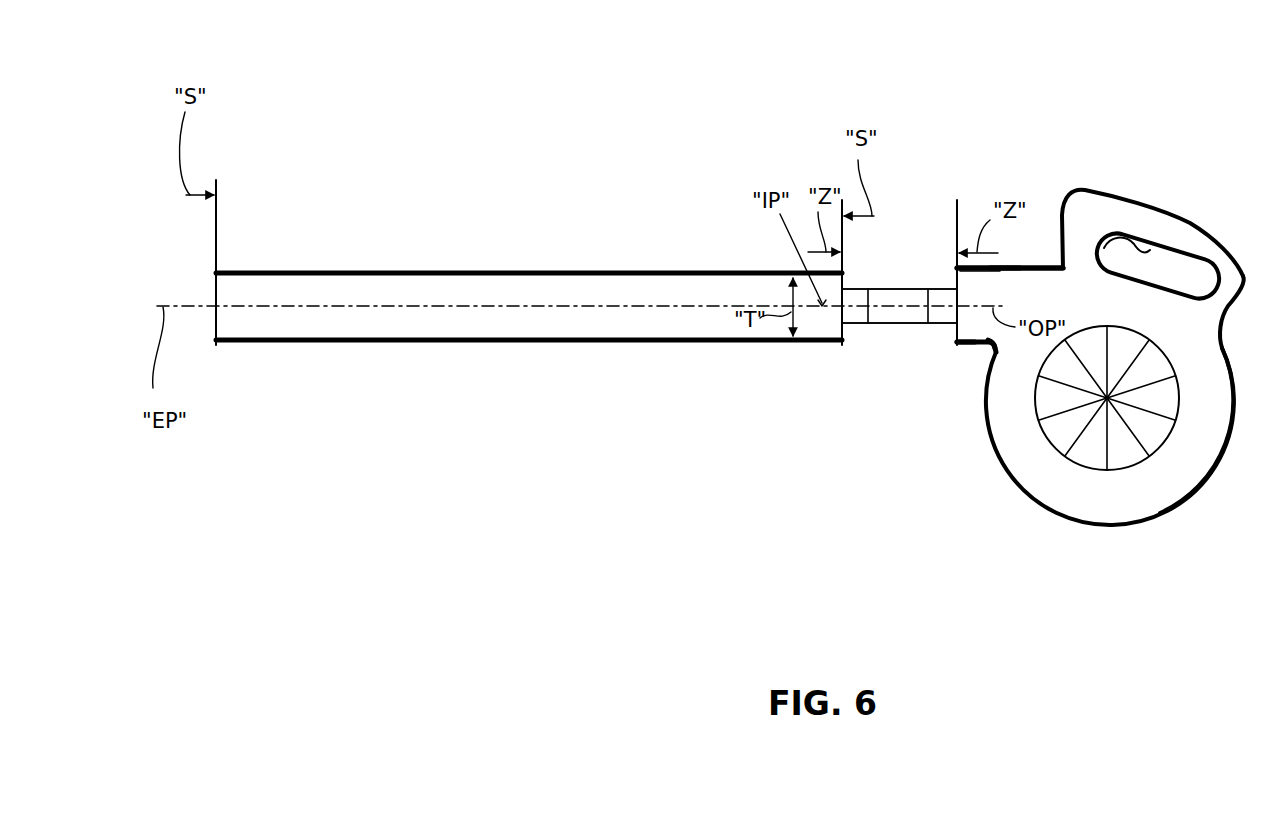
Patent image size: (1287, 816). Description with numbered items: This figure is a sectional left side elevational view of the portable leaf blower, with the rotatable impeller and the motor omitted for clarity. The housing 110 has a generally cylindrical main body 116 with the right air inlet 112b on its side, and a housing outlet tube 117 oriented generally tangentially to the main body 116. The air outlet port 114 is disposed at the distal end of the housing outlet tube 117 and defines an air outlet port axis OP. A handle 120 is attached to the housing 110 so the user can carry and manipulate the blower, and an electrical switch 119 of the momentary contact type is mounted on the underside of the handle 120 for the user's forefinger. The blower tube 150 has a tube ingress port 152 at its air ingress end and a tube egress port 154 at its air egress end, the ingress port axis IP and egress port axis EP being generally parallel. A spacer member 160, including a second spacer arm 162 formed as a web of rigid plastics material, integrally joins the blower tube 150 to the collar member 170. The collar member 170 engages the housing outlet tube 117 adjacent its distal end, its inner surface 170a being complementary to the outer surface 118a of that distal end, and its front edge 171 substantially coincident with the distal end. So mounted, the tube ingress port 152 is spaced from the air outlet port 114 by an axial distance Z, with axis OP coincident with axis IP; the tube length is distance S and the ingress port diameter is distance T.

The housing 110 is at (1007, 476).
The right air inlet 112b is at (1117, 452).
The air outlet port 114 is at (951, 281).
The main body 116 is at (1222, 458).
The housing outlet tube 117 is at (1004, 266).
The outer surface 118a is at (976, 274).
The electrical switch 119 is at (1143, 247).
The handle 120 is at (1177, 210).
The blower tube 150 is at (527, 272).
The tube ingress port 152 is at (844, 333).
The tube egress port 154 is at (214, 328).
The spacer member 160 is at (892, 298).
The second spacer arm 162 is at (899, 306).
The collar member 170 is at (970, 344).
The inner surface 170a is at (983, 344).
The front edge 171 is at (960, 342).